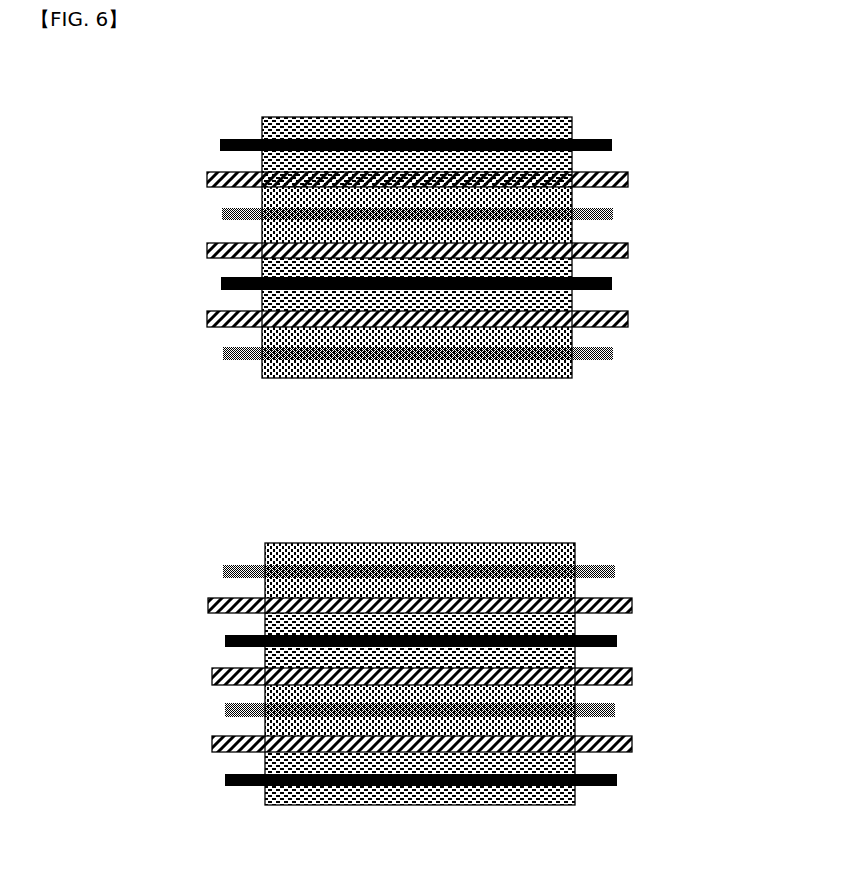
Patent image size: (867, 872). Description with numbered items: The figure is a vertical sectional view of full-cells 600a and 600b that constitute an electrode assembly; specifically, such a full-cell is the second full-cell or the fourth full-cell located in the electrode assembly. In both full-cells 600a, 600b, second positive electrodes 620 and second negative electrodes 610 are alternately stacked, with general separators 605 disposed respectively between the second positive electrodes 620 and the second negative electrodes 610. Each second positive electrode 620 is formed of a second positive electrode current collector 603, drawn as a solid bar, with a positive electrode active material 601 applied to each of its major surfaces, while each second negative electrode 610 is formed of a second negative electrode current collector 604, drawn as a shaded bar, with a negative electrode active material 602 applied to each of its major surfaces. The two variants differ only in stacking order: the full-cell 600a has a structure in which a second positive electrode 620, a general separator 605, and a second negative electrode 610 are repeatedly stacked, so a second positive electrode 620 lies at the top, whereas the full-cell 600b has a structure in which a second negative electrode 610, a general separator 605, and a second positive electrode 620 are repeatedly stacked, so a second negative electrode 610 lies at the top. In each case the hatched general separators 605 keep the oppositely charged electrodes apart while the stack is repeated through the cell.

The full-cell 600a is at (110, 128).
The full-cell 600b is at (110, 542).
The positive electrode active material 601 is at (572, 124).
The negative electrode active material 602 is at (262, 192).
The second positive electrode current collector 603 is at (612, 145).
The second negative electrode current collector 604 is at (222, 214).
The general separator 605 is at (628, 185).
The second negative electrode 610 is at (140, 173).
The second positive electrode 620 is at (680, 104).